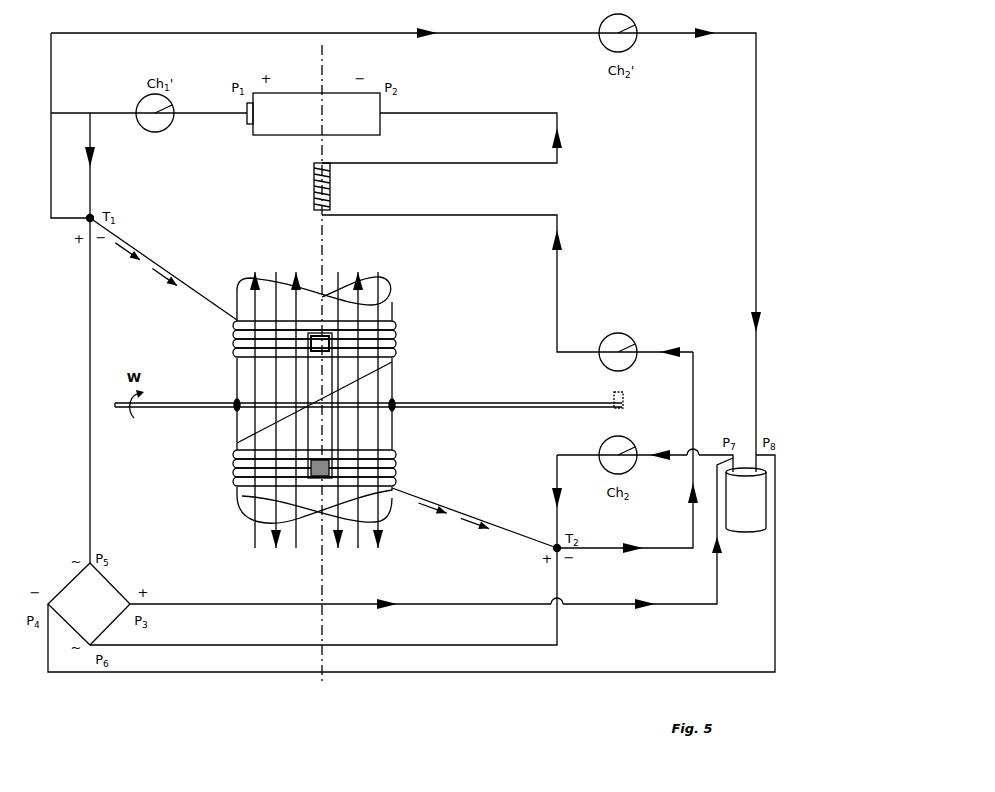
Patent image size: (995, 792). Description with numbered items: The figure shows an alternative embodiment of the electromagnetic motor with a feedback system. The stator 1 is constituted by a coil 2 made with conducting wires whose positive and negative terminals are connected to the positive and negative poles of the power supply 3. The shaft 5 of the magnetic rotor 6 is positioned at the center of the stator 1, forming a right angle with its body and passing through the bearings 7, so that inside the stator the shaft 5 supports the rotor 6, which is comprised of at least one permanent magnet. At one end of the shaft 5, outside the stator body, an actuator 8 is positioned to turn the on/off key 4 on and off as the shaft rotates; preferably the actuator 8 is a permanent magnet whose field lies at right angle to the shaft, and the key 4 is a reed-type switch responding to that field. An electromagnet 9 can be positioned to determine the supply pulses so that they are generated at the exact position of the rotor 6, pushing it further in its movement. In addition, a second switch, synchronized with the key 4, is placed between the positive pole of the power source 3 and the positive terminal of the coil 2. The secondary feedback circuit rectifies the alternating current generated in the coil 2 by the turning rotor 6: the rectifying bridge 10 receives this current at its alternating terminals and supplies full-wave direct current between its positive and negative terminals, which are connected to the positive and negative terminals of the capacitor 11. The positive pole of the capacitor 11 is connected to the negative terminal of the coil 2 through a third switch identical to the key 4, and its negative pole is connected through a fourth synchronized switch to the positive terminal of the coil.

The stator 1 is at (314, 410).
The coil 2 is at (327, 403).
The power supply 3 is at (313, 114).
The on/off key 4 is at (618, 332).
The shaft 5 is at (368, 417).
The magnetic rotor 6 is at (320, 405).
The bearings 7 is at (312, 397).
The actuator 8 is at (634, 403).
The electromagnet 9 is at (308, 186).
The rectifying bridge 10 is at (89, 604).
The capacitor 11 is at (746, 500).